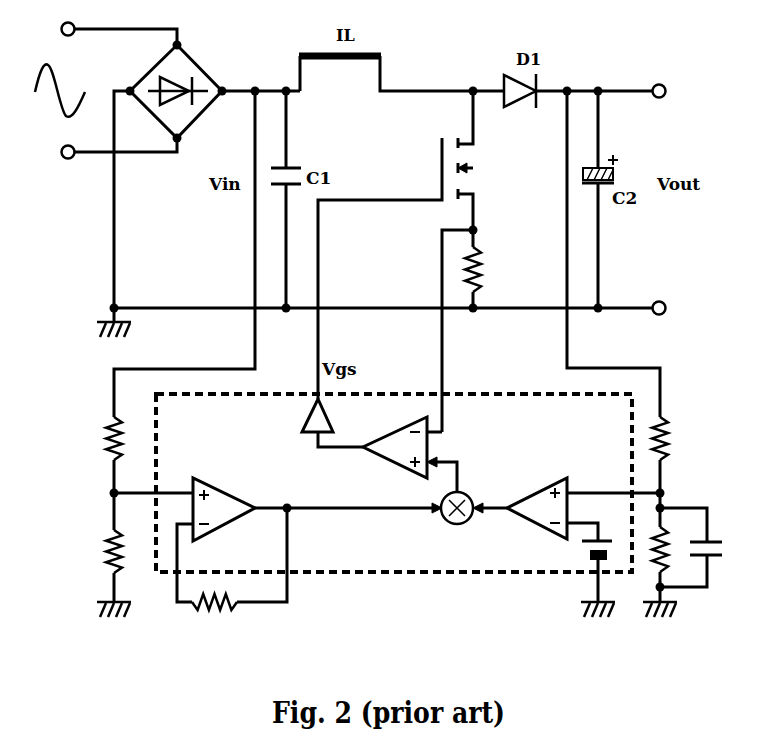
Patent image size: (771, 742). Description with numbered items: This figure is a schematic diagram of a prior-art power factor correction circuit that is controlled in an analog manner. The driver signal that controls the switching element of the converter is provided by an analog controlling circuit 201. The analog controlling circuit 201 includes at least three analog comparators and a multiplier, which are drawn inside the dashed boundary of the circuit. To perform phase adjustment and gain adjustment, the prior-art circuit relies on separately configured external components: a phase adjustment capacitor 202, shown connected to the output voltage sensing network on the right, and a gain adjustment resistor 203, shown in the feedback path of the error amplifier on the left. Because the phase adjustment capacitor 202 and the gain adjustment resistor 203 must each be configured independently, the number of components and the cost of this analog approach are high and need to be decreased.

The analog controlling circuit 201 is at (378, 526).
The phase adjustment capacitor 202 is at (692, 533).
The gain adjustment resistor 203 is at (223, 613).